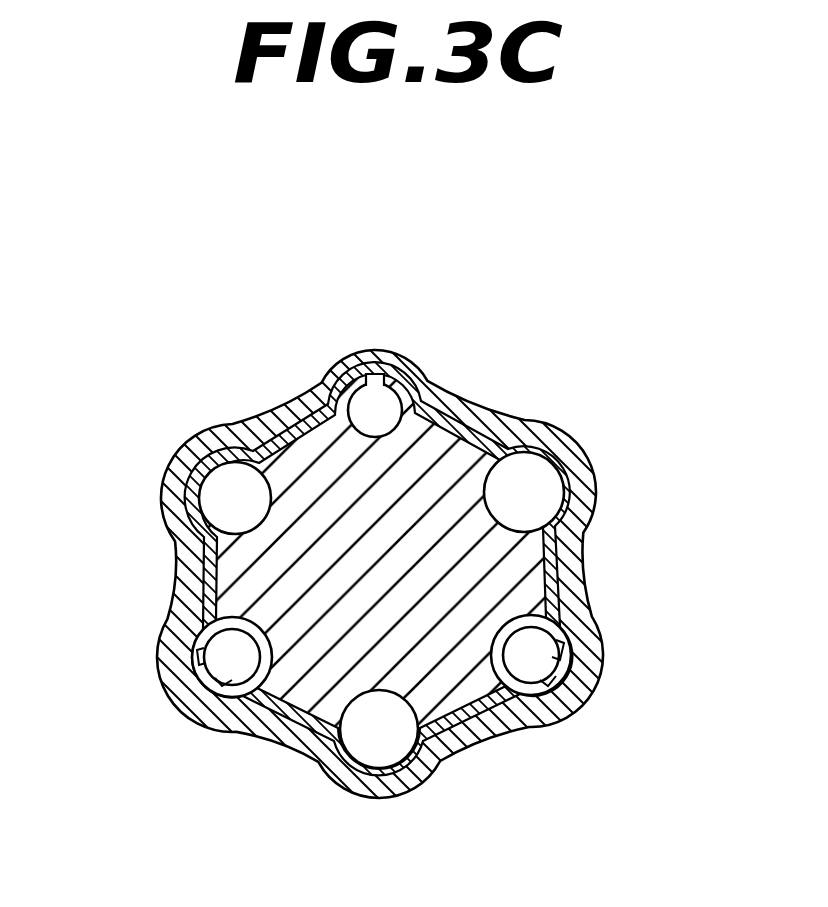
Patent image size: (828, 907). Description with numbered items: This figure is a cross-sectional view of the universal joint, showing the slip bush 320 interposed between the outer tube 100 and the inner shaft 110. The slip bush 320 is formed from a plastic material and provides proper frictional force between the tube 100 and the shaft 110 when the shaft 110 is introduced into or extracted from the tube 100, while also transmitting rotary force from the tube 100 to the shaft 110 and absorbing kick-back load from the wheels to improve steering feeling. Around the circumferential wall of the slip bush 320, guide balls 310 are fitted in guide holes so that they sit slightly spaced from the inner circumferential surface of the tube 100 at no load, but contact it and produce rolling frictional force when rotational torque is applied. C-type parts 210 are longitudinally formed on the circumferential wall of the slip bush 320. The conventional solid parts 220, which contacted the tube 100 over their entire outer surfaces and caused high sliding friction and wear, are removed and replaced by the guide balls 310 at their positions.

The tube 100 is at (470, 400).
The shaft 110 is at (290, 600).
The C-type parts 210 is at (603, 630).
The solid parts 220 is at (530, 493).
The guide balls 310 is at (228, 492).
The slip bush 320 is at (210, 568).